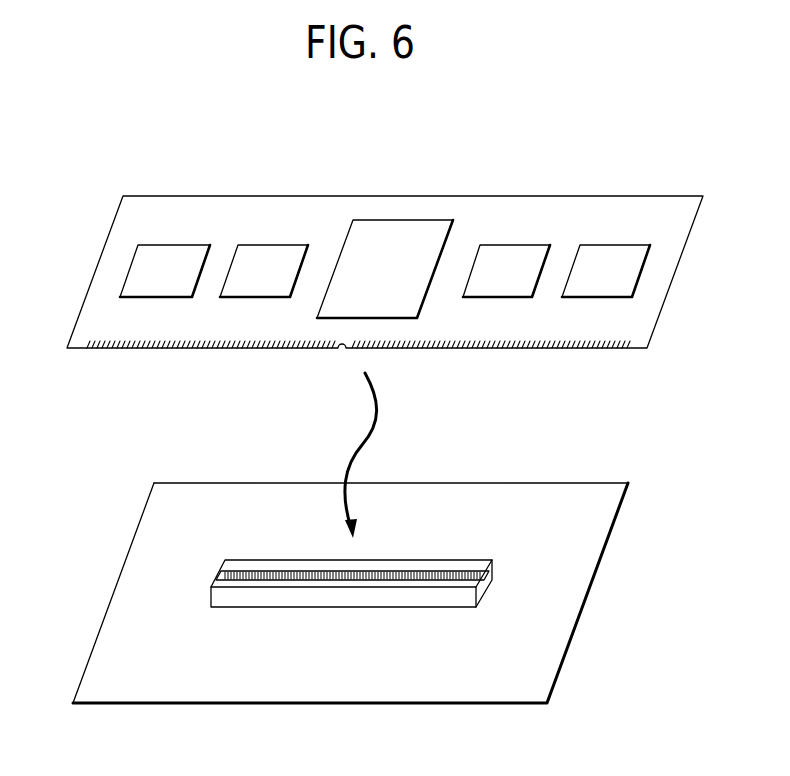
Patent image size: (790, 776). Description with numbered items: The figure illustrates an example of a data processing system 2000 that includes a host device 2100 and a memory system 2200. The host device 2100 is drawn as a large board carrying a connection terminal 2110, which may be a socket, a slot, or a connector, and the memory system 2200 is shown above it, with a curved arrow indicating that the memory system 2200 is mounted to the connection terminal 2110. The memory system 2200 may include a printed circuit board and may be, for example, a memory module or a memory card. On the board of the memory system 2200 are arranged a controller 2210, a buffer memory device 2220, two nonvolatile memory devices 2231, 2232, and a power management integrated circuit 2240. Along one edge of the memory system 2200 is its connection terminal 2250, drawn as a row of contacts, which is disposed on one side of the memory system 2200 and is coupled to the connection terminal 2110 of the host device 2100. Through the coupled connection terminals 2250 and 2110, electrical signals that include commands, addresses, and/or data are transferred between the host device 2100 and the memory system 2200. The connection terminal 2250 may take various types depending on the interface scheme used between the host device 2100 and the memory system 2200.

The data processing system 2000 is at (72, 163).
The host device 2100 is at (350, 593).
The connection terminal 2110 is at (512, 554).
The memory system 2200 is at (385, 294).
The controller 2210 is at (385, 269).
The buffer memory device 2220 is at (264, 271).
The nonvolatile memory device 2231 is at (506, 271).
The nonvolatile memory device 2232 is at (606, 271).
The power management integrated circuit 2240 is at (165, 271).
The connection terminal 2250 is at (107, 349).